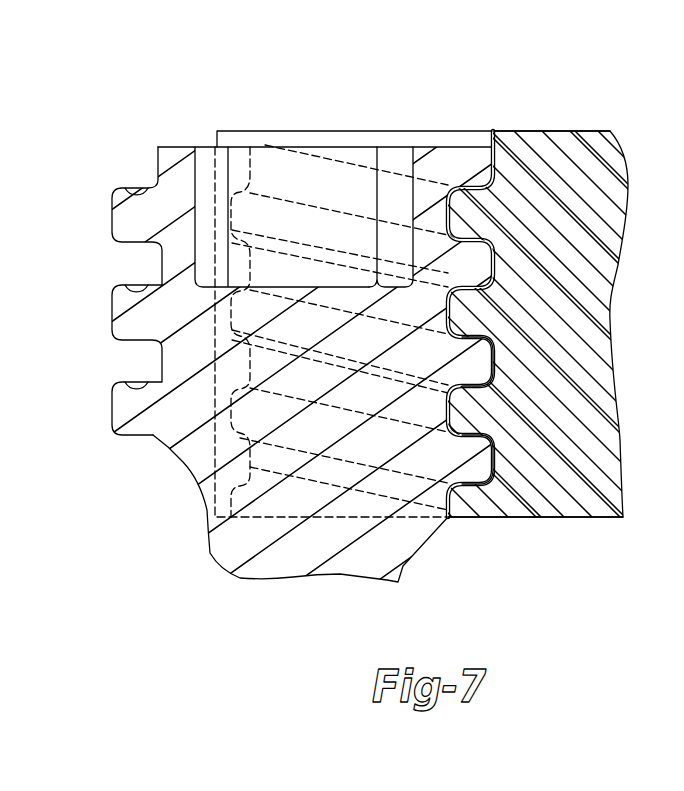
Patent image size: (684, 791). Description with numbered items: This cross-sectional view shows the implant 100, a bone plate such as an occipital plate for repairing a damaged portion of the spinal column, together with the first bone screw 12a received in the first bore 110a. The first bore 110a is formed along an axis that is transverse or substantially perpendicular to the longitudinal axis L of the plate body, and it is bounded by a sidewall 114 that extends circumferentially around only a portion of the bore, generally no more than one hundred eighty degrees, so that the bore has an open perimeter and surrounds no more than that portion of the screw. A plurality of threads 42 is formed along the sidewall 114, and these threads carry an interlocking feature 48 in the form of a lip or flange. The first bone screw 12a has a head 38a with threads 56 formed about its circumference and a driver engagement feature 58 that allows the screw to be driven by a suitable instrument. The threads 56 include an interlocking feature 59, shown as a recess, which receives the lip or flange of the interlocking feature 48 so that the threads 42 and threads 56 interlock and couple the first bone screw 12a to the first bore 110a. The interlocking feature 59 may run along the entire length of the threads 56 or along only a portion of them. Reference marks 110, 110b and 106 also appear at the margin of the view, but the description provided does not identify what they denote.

The implant 100 is at (600, 60).
The first bone screw 12a is at (390, 135).
The threads 42 is at (487, 130).
The sidewall 114 is at (190, 136).
The driver engagement feature 58 is at (208, 150).
The head 38a is at (72, 306).
The interlocking feature 59 is at (126, 284).
The threads 56 is at (124, 456).
The interlocking feature 48 is at (480, 358).
The first bore 110a is at (462, 533).
The end portion 110 is at (13, 513).
The end portion surface 110b is at (0, 570).
The longitudinal axis L is at (0, 660).
The component 106 is at (0, 733).